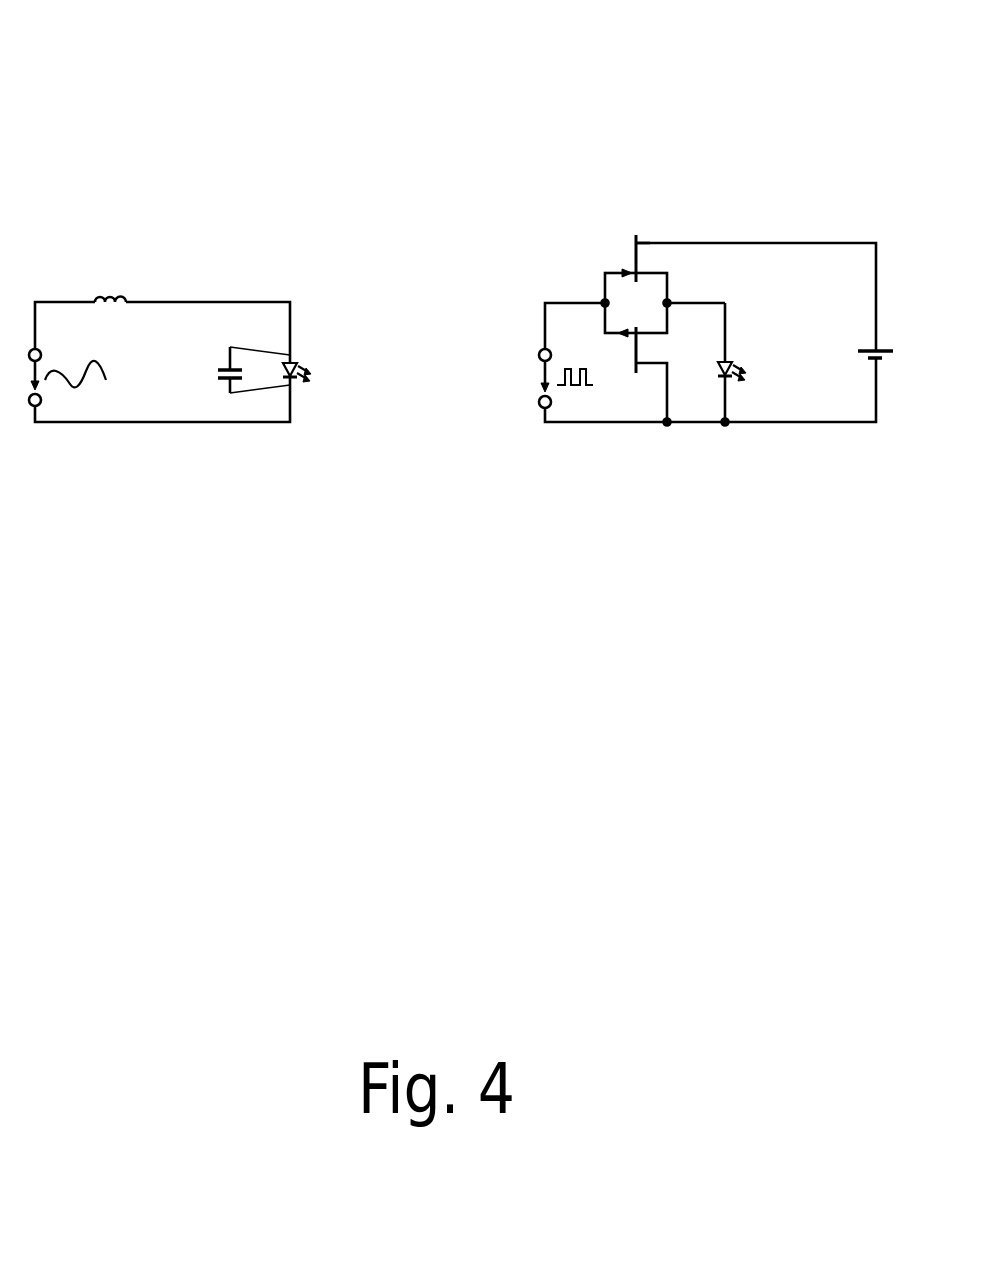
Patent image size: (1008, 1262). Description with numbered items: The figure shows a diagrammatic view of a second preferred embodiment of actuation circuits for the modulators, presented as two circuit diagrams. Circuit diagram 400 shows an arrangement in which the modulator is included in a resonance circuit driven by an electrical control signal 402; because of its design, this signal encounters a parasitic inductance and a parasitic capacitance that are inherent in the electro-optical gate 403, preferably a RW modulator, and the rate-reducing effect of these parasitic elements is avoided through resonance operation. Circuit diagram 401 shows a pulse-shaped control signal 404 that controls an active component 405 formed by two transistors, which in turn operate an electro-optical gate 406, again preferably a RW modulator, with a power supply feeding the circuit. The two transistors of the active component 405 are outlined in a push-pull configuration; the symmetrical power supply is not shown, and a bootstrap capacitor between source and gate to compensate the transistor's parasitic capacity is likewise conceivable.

The circuit diagram 400 is at (238, 68).
The circuit diagram 401 is at (784, 68).
The electrical control signal 402 is at (80, 381).
The electro-optical gate 403 is at (300, 363).
The pulse-shaped control signal 404 is at (575, 372).
The active component 405 is at (635, 302).
The electro-optical gate 406 is at (720, 374).